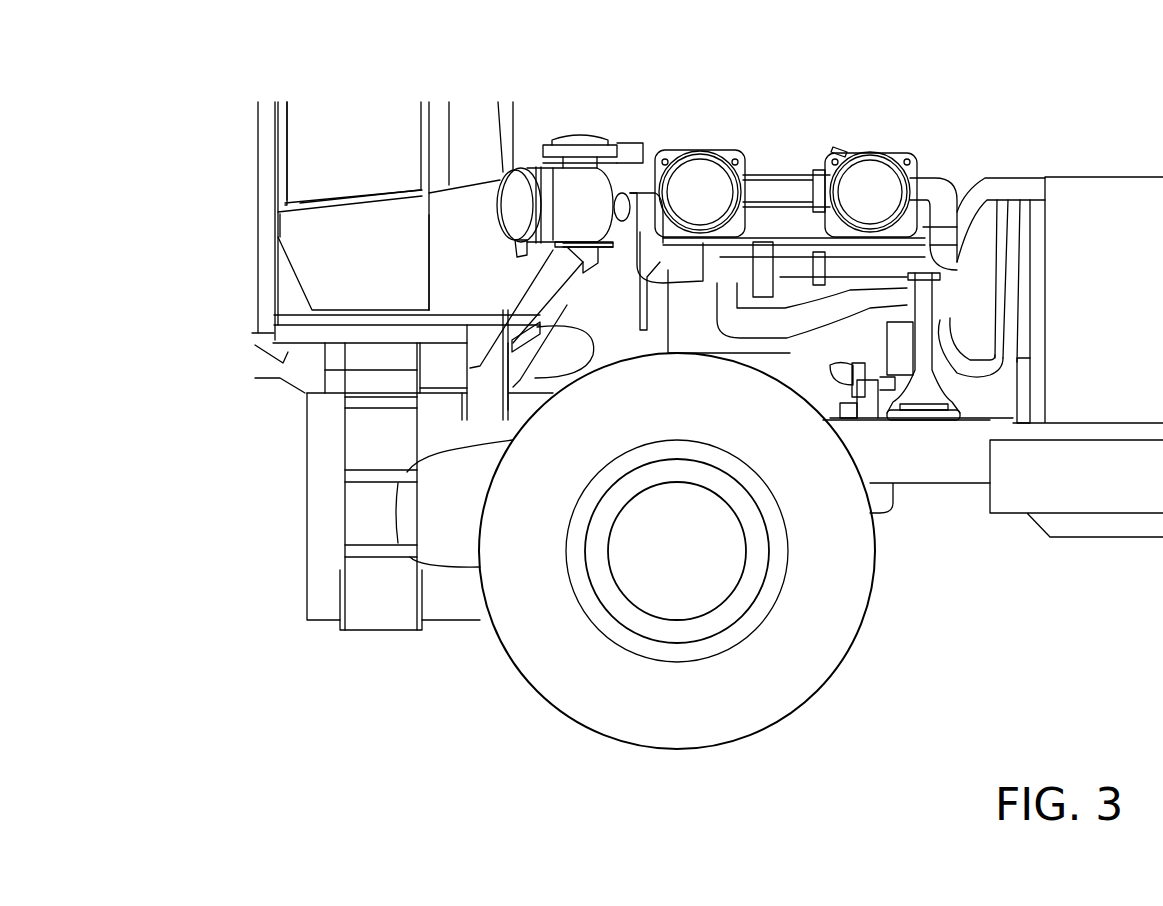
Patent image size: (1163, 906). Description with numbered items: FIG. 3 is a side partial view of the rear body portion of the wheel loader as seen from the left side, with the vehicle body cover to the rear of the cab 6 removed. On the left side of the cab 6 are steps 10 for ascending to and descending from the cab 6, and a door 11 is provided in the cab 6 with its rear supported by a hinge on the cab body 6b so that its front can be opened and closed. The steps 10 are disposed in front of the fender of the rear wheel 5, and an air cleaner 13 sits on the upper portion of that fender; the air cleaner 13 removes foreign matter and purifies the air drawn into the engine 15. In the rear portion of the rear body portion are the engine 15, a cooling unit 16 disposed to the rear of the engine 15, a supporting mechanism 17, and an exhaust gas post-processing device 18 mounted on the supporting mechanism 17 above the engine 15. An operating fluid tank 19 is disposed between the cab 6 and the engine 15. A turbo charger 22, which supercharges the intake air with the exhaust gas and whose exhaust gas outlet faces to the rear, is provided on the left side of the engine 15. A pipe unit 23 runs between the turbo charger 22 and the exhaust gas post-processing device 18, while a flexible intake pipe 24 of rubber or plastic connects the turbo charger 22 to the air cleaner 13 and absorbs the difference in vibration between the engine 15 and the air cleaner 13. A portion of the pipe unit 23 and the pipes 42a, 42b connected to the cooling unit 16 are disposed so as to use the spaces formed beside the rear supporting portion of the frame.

The cab 6 is at (406, 94).
The door 11 is at (320, 140).
The cab body 6b is at (470, 258).
The steps 10 is at (343, 450).
The air cleaner 13 is at (577, 130).
The operating fluid tank 19 is at (630, 143).
The intake pipe 24 is at (659, 185).
The exhaust gas post-processing device 18 is at (845, 145).
The turbo charger 22 is at (753, 240).
The engine 15 is at (832, 292).
The pipe unit 23 is at (938, 172).
The pipe 42b is at (985, 178).
The pipe 42a is at (1028, 190).
The cooling unit 16 is at (1085, 167).
The supporting mechanism 17 is at (950, 317).
The rear wheel 5 is at (550, 663).